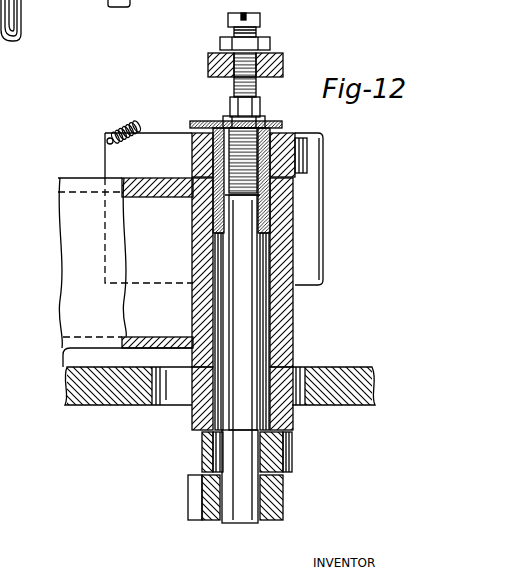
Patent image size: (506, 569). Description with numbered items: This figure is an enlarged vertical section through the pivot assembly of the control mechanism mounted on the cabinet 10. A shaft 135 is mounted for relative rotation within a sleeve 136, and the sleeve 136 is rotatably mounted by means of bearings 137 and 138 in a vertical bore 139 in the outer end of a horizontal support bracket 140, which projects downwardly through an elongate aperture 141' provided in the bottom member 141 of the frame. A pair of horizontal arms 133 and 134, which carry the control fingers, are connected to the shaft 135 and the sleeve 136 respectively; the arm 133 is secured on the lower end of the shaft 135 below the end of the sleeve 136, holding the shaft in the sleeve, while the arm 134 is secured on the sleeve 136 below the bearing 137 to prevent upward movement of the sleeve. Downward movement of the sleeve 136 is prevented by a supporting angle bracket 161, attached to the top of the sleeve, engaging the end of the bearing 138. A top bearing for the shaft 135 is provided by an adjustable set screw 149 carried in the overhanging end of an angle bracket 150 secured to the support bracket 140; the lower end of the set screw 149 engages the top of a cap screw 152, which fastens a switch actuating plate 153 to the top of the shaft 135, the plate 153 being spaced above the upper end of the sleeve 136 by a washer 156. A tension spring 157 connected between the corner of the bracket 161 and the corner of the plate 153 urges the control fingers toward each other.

The cabinet 10 is at (38, 9).
The adjustable set screw 149 is at (258, 30).
The angle bracket 150 is at (208, 65).
The cap screw 152 is at (230, 107).
The switch actuating plate 153 is at (204, 124).
The washer 156 is at (262, 124).
The tension spring 157 is at (125, 130).
The supporting angle bracket 161 is at (276, 136).
The bearing 138 is at (270, 205).
The vertical bore 139 is at (272, 325).
The bearing 137 is at (292, 370).
The horizontal support bracket 140 is at (75, 346).
The bottom member 141 is at (353, 386).
The elongate aperture 141' is at (128, 400).
The horizontal arm 134 is at (202, 450).
The horizontal arm 133 is at (202, 492).
The shaft 135 is at (228, 518).
The sleeve 136 is at (270, 450).